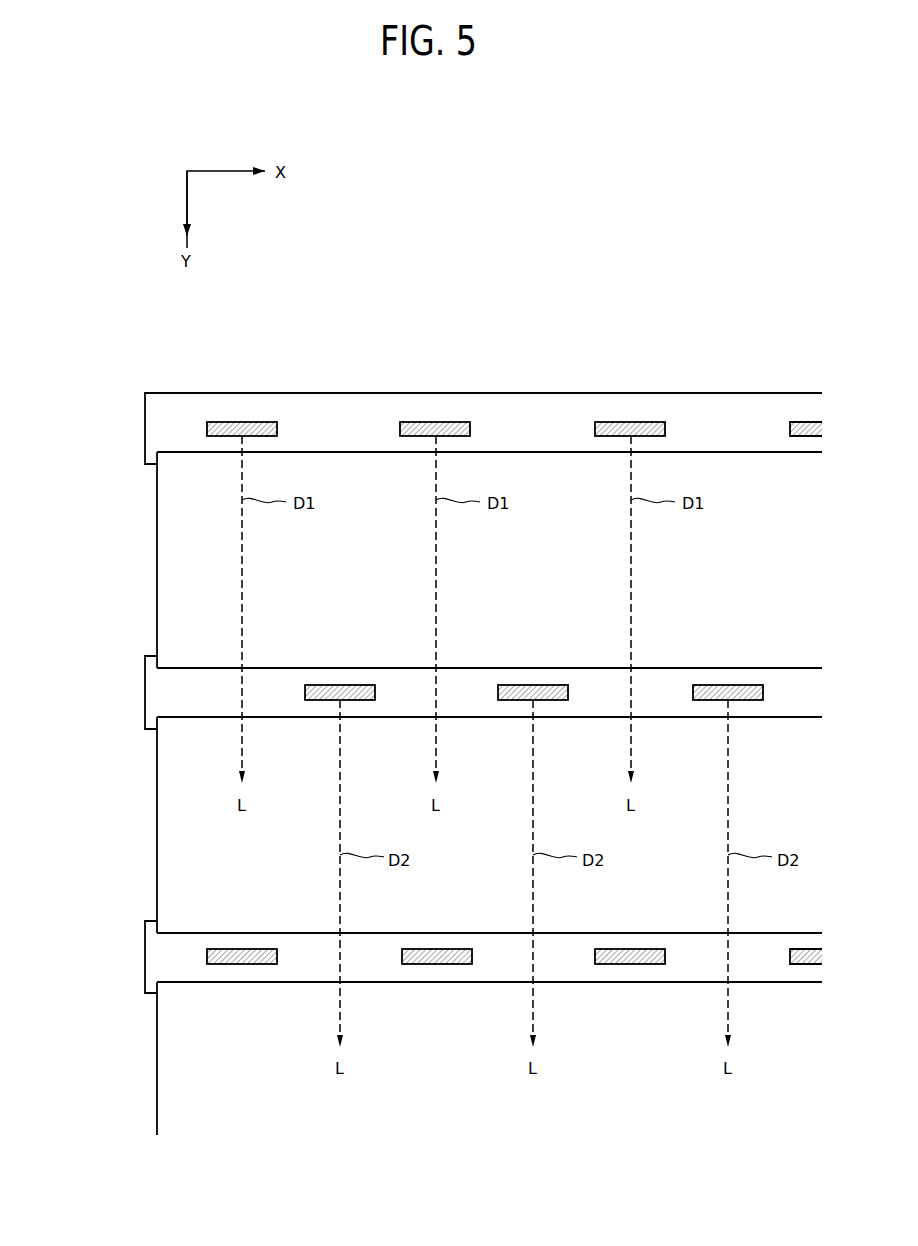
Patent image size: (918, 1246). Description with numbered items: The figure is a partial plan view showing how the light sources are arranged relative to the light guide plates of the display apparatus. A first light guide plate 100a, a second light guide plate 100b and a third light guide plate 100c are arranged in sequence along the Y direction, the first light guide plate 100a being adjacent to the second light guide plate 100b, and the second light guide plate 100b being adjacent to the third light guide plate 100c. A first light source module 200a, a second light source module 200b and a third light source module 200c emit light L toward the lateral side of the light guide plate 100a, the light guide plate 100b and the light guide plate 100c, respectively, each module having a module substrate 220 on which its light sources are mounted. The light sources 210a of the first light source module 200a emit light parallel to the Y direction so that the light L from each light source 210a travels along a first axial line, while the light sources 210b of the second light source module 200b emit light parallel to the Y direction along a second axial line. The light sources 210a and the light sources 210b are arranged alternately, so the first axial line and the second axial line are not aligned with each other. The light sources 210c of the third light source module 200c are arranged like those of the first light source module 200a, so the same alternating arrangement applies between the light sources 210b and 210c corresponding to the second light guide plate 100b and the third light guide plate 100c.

The first light source module 200a is at (137, 410).
The second light source module 200b is at (137, 673).
The third light source module 200c is at (137, 940).
The module substrate 220 is at (145, 452).
The first light guide plate 100a is at (162, 552).
The second light guide plate 100b is at (162, 821).
The third light guide plate 100c is at (162, 1066).
The light sources of the first light source module 210a is at (260, 427).
The light sources of the second light source module 210b is at (358, 692).
The light sources of the third light source module 210c is at (438, 958).